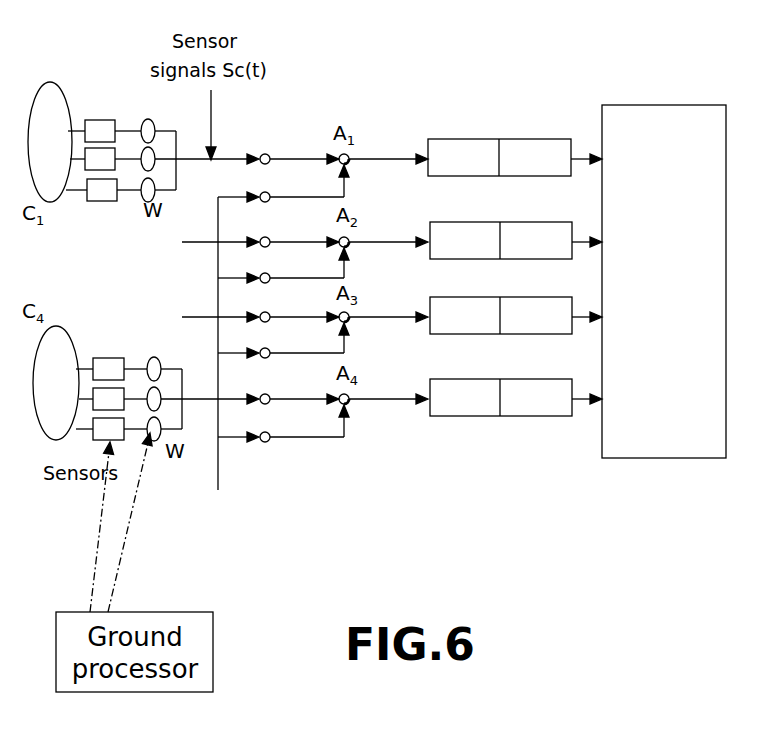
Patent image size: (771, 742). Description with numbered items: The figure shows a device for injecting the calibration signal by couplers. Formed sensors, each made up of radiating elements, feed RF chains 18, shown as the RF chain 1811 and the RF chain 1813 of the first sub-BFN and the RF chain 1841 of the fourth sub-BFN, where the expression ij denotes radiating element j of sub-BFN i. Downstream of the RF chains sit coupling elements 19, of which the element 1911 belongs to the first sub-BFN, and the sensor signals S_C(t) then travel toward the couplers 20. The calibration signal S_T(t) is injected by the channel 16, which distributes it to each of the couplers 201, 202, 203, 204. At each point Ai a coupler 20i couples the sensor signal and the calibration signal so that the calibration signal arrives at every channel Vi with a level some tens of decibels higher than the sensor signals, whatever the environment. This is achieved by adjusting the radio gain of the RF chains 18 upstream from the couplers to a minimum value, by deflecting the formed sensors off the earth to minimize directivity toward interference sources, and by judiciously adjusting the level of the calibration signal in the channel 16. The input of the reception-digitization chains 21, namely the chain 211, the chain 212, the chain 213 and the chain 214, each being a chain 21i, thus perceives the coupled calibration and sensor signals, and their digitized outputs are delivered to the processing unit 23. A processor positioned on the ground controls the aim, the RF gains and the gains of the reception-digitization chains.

The RF chains 18 is at (105, 264).
The RF chain 1811 is at (104, 115).
The RF chain 1813 is at (104, 204).
The RF chain 1841 is at (106, 383).
The coupling elements 19 is at (157, 265).
The coupling element of first cell 1911 is at (157, 145).
The channel 16 is at (212, 358).
The couplers 20 is at (314, 327).
The coupler 201 is at (295, 178).
The coupler 202 is at (295, 260).
The coupler 203 is at (295, 335).
The coupler 204 is at (295, 418).
The coupler 20i is at (340, 476).
The reception-digitization chains 21 is at (398, 363).
The reception-digitization chain 211 is at (498, 137).
The reception-digitization chain 212 is at (500, 222).
The reception-digitization chain 213 is at (500, 298).
The reception-digitization chain 214 is at (500, 380).
The reception-digitization chain 21i is at (215, 628).
The processing unit 23 is at (664, 281).